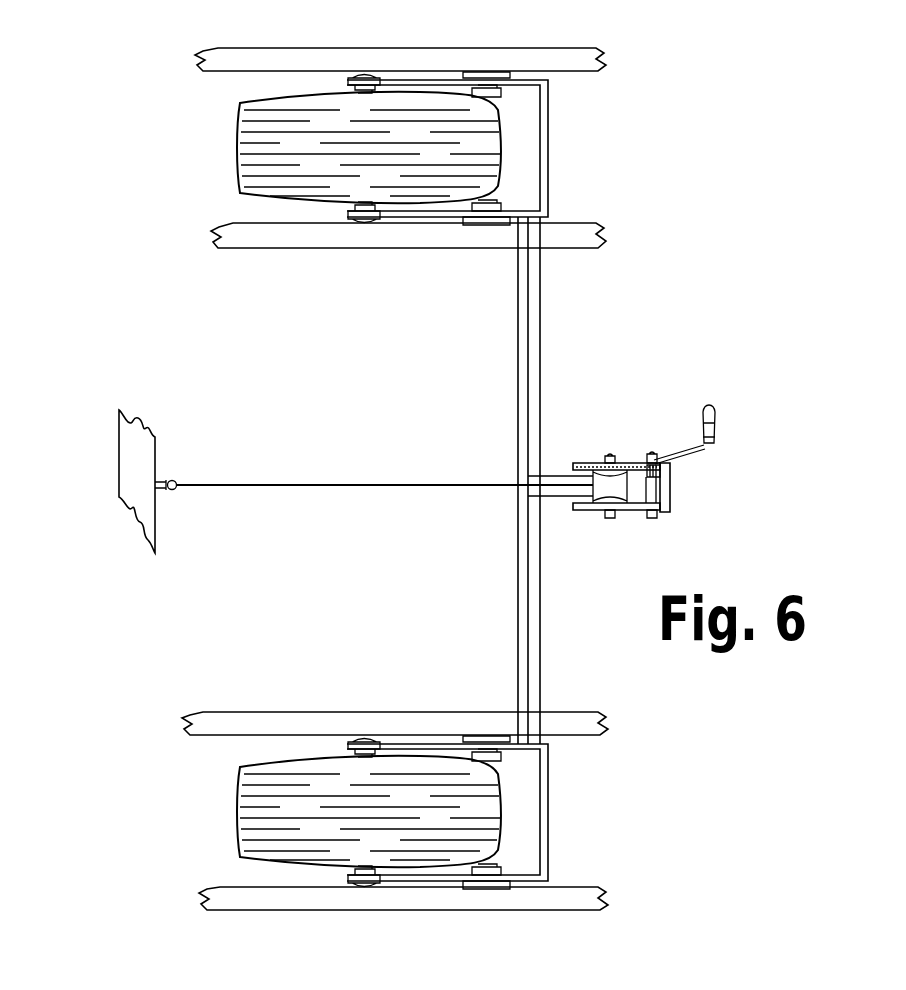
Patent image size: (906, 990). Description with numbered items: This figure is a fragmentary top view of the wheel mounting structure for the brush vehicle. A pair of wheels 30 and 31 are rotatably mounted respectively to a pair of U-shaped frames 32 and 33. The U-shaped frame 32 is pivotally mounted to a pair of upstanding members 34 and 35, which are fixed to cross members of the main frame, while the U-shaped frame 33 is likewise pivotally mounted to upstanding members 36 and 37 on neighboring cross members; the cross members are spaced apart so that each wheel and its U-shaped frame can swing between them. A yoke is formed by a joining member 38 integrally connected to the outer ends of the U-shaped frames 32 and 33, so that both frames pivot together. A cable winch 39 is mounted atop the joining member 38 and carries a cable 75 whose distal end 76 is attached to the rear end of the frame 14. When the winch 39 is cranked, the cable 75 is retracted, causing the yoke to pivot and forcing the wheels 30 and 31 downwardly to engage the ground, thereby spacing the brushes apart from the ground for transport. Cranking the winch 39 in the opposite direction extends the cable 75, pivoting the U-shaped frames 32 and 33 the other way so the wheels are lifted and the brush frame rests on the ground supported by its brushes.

The frame 14 is at (130, 472).
The wheel 30 is at (240, 160).
The wheel 31 is at (240, 810).
The U-shaped frame 32 is at (420, 80).
The U-shaped frame 33 is at (400, 748).
The upstanding member 34 is at (497, 72).
The upstanding member 35 is at (492, 218).
The upstanding member 36 is at (492, 735).
The upstanding member 37 is at (495, 887).
The joining member 38 is at (537, 664).
The cable winch 39 is at (634, 442).
The cable 75 is at (238, 483).
The distal end 76 is at (165, 482).